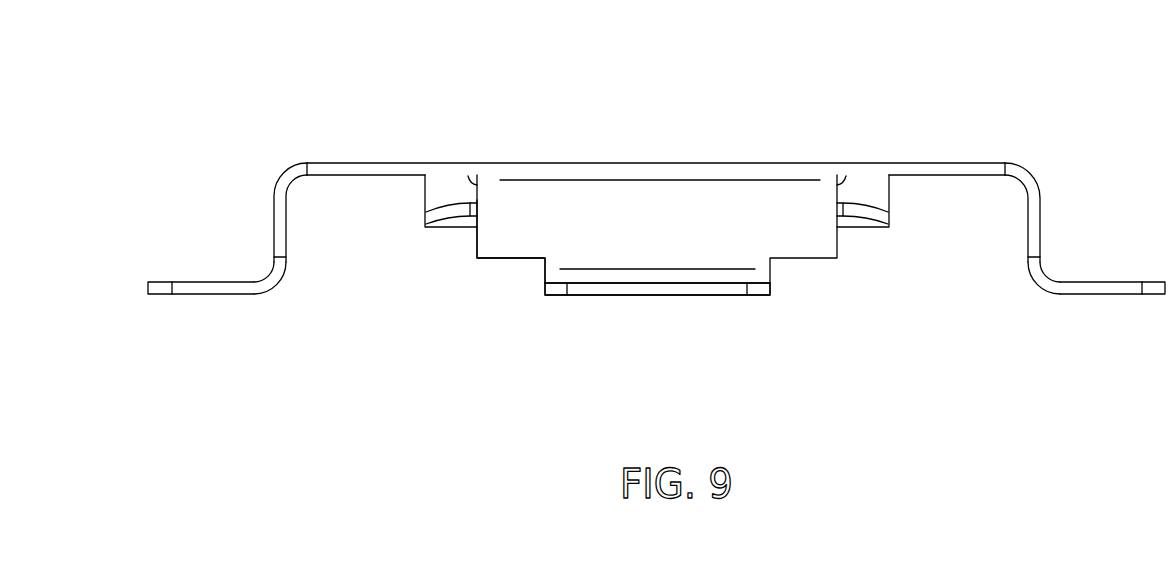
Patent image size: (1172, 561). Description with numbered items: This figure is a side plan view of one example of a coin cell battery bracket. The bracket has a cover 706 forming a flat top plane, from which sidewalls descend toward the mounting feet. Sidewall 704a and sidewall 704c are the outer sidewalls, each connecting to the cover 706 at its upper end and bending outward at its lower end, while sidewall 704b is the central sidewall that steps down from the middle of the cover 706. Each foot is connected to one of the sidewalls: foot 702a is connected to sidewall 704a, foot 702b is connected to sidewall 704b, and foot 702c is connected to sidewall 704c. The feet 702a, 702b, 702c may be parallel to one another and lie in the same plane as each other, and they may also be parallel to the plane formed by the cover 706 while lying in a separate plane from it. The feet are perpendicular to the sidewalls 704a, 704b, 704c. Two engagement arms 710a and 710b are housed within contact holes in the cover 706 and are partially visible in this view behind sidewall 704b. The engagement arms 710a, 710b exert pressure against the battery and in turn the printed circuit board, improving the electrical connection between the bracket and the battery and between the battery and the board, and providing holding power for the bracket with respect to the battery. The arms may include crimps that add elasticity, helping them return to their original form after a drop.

The foot 702a is at (227, 295).
The foot 702b is at (680, 295).
The foot 702c is at (1108, 295).
The sidewall 704a is at (281, 221).
The sidewall 704b is at (516, 233).
The sidewall 704c is at (1031, 221).
The cover 706 is at (965, 163).
The engagement arm 710a is at (438, 192).
The engagement arm 710b is at (872, 192).